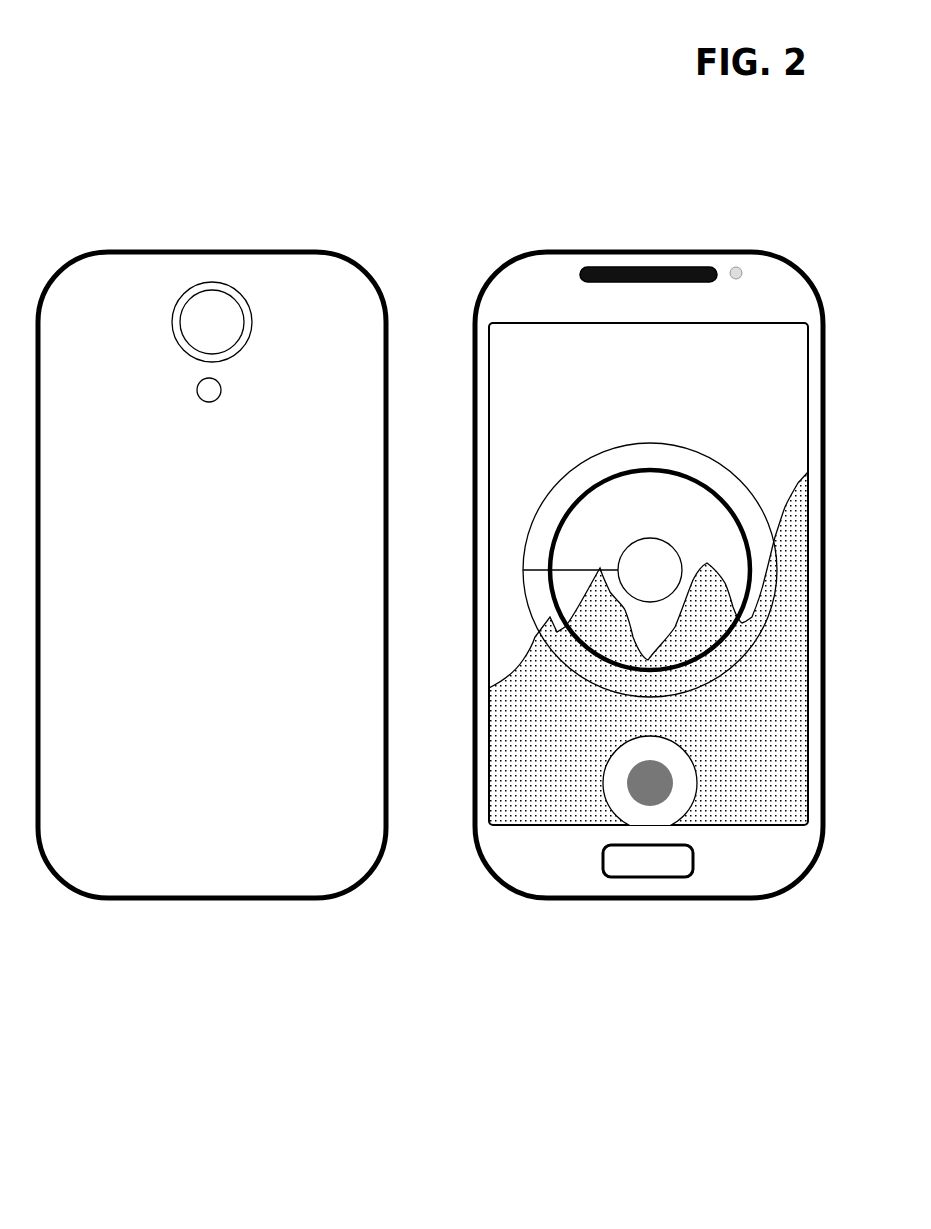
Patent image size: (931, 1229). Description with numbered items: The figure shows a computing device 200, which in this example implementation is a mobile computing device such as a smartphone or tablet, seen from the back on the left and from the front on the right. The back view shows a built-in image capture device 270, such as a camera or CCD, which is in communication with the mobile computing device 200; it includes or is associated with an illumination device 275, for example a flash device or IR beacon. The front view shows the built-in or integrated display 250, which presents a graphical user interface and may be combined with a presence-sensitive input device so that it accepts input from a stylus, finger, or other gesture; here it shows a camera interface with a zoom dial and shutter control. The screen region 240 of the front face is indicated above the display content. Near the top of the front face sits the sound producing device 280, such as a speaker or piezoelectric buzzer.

The computing device 200 is at (208, 902).
The display screen 240 is at (527, 386).
The display 250 is at (544, 830).
The image capture device 270 is at (189, 286).
The illumination device 275 is at (194, 389).
The sound producing device 280 is at (567, 264).